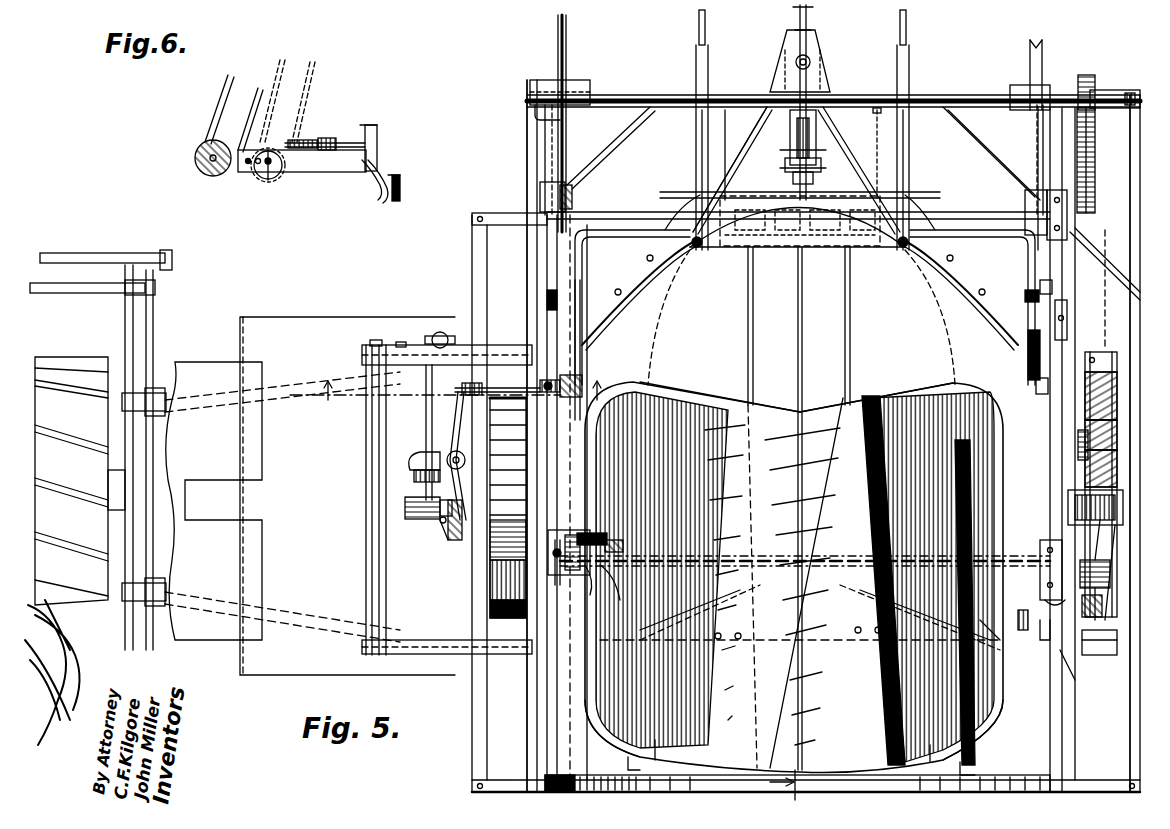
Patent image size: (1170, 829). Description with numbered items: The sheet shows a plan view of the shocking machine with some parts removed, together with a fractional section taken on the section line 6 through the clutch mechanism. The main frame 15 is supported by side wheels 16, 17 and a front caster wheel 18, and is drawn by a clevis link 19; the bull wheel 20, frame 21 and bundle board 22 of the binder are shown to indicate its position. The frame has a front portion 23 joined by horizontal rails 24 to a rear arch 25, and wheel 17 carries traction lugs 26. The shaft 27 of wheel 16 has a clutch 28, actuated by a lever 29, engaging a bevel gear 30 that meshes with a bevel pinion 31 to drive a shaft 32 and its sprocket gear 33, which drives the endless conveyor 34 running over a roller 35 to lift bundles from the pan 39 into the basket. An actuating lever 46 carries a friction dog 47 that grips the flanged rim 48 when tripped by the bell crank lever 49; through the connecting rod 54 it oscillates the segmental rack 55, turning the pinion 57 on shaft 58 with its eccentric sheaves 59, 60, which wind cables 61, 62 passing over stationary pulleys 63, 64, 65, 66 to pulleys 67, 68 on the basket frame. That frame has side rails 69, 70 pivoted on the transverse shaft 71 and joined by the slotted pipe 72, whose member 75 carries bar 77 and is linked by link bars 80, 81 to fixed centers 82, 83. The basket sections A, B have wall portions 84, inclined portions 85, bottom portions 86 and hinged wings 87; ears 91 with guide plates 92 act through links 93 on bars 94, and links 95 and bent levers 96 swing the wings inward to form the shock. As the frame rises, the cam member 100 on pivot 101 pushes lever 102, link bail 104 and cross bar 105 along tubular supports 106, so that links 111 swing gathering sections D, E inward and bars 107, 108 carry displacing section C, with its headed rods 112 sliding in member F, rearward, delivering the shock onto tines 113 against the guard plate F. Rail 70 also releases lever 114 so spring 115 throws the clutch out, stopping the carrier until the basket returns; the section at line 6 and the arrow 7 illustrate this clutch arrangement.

In FIG. 5, the section line 6 is at (451, 396).
In FIG. 5, the section line arrow 7 is at (793, 22).
In FIG. 6, the main frame 15 is at (378, 147).
In FIG. 5, the main frame 15 is at (1083, 688).
In FIG. 5, the side wheel 16 is at (490, 570).
In FIG. 5, the side wheel 17 is at (1097, 352).
In FIG. 5, the front caster wheel 18 is at (809, 61).
In FIG. 5, the clevis link 19 is at (810, 22).
In FIG. 5, the bull wheel 20 is at (62, 565).
In FIG. 5, the frame 21 is at (125, 322).
In FIG. 5, the bundle board 22 is at (205, 478).
In FIG. 5, the front portion 23 is at (799, 160).
In FIG. 5, the horizontal rail 24 is at (1131, 229).
In FIG. 5, the rear arch 25 is at (805, 792).
In FIG. 5, the traction lug 26 is at (1112, 368).
In FIG. 5, the shaft 27 is at (405, 510).
In FIG. 5, the clutch 28 is at (458, 538).
In FIG. 6, the lever 29 is at (300, 140).
In FIG. 5, the lever 29 is at (455, 430).
In FIG. 5, the bevel gear 30 is at (440, 525).
In FIG. 5, the bevel pinion 31 is at (412, 478).
In FIG. 6, the shaft 32 is at (268, 180).
In FIG. 5, the shaft 32 is at (426, 428).
In FIG. 6, the sprocket gear 33 is at (282, 178).
In FIG. 5, the sprocket gear 33 is at (442, 336).
In FIG. 6, the endless conveyor 34 is at (220, 102).
In FIG. 5, the endless conveyor 34 is at (379, 601).
In FIG. 6, the roller 35 is at (200, 160).
In FIG. 5, the roller 35 is at (366, 565).
In FIG. 5, the pan 39 is at (290, 676).
In FIG. 5, the actuating lever 46 is at (1110, 575).
In FIG. 5, the friction dog 47 is at (1104, 598).
In FIG. 5, the flanged rim 48 is at (1090, 450).
In FIG. 5, the bell crank lever 49 is at (1040, 632).
In FIG. 5, the connecting rod 54 is at (1068, 316).
In FIG. 5, the segmental rack 55 is at (1090, 181).
In FIG. 5, the pinion 57 is at (1086, 76).
In FIG. 5, the shaft 58 is at (972, 95).
In FIG. 5, the sheave 59 is at (1044, 55).
In FIG. 5, the sheave 60 is at (568, 55).
In FIG. 5, the cable 61 is at (1038, 137).
In FIG. 5, the cable 62 is at (565, 133).
In FIG. 5, the pulley 63 is at (1026, 200).
In FIG. 5, the pulley 64 is at (1034, 385).
In FIG. 5, the pulley 65 is at (574, 188).
In FIG. 5, the pulley 66 is at (575, 380).
In FIG. 5, the pulley 67 is at (1045, 558).
In FIG. 5, the pulley 68 is at (556, 556).
In FIG. 5, the side rail 69 is at (1054, 286).
In FIG. 6, the side rail 70 is at (400, 187).
In FIG. 5, the side rail 70 is at (530, 260).
In FIG. 5, the transverse shaft 71 is at (962, 222).
In FIG. 5, the transverse pipe 72 is at (1016, 620).
In FIG. 5, the member 75 is at (592, 540).
In FIG. 5, the bar 77 is at (612, 539).
In FIG. 5, the link bar 80 is at (1025, 360).
In FIG. 5, the link bar 81 is at (570, 322).
In FIG. 5, the fixed center 82 is at (1040, 305).
In FIG. 5, the fixed center 83 is at (540, 300).
In FIG. 5, the vertical wall portion 84 is at (978, 768).
In FIG. 5, the lower inclined portion 85 is at (784, 760).
In FIG. 5, the bottom portion 86 is at (776, 583).
In FIG. 5, the wing 87 is at (590, 715).
In FIG. 5, the ear 91 is at (792, 599).
In FIG. 5, the plate 92 is at (797, 583).
In FIG. 5, the link 93 is at (819, 614).
In FIG. 5, the bar 94 is at (775, 646).
In FIG. 5, the link 95 is at (1010, 652).
In FIG. 5, the bent lever 96 is at (590, 586).
In FIG. 5, the cam member 100 is at (815, 182).
In FIG. 5, the pivot 101 is at (818, 165).
In FIG. 5, the lever 102 is at (828, 119).
In FIG. 5, the link bail 104 is at (760, 130).
In FIG. 5, the cross bar 105 is at (690, 193).
In FIG. 5, the tubular support 106 is at (695, 145).
In FIG. 5, the bar 107 is at (710, 38).
In FIG. 5, the vertical bar 108 is at (698, 248).
In FIG. 5, the link 111 is at (668, 200).
In FIG. 5, the headed rod 112 is at (880, 124).
In FIG. 5, the tine 113 is at (845, 345).
In FIG. 6, the lever 114 is at (374, 178).
In FIG. 5, the lever 114 is at (545, 383).
In FIG. 6, the spring 115 is at (335, 140).
In FIG. 5, the spring 115 is at (465, 388).
In FIG. 5, the basket side section A is at (925, 400).
In FIG. 5, the basket side section B is at (688, 398).
In FIG. 5, the displacing section C is at (782, 247).
In FIG. 5, the gathering section D is at (965, 280).
In FIG. 5, the gathering section E is at (633, 280).
In FIG. 5, the guard plate F is at (618, 233).